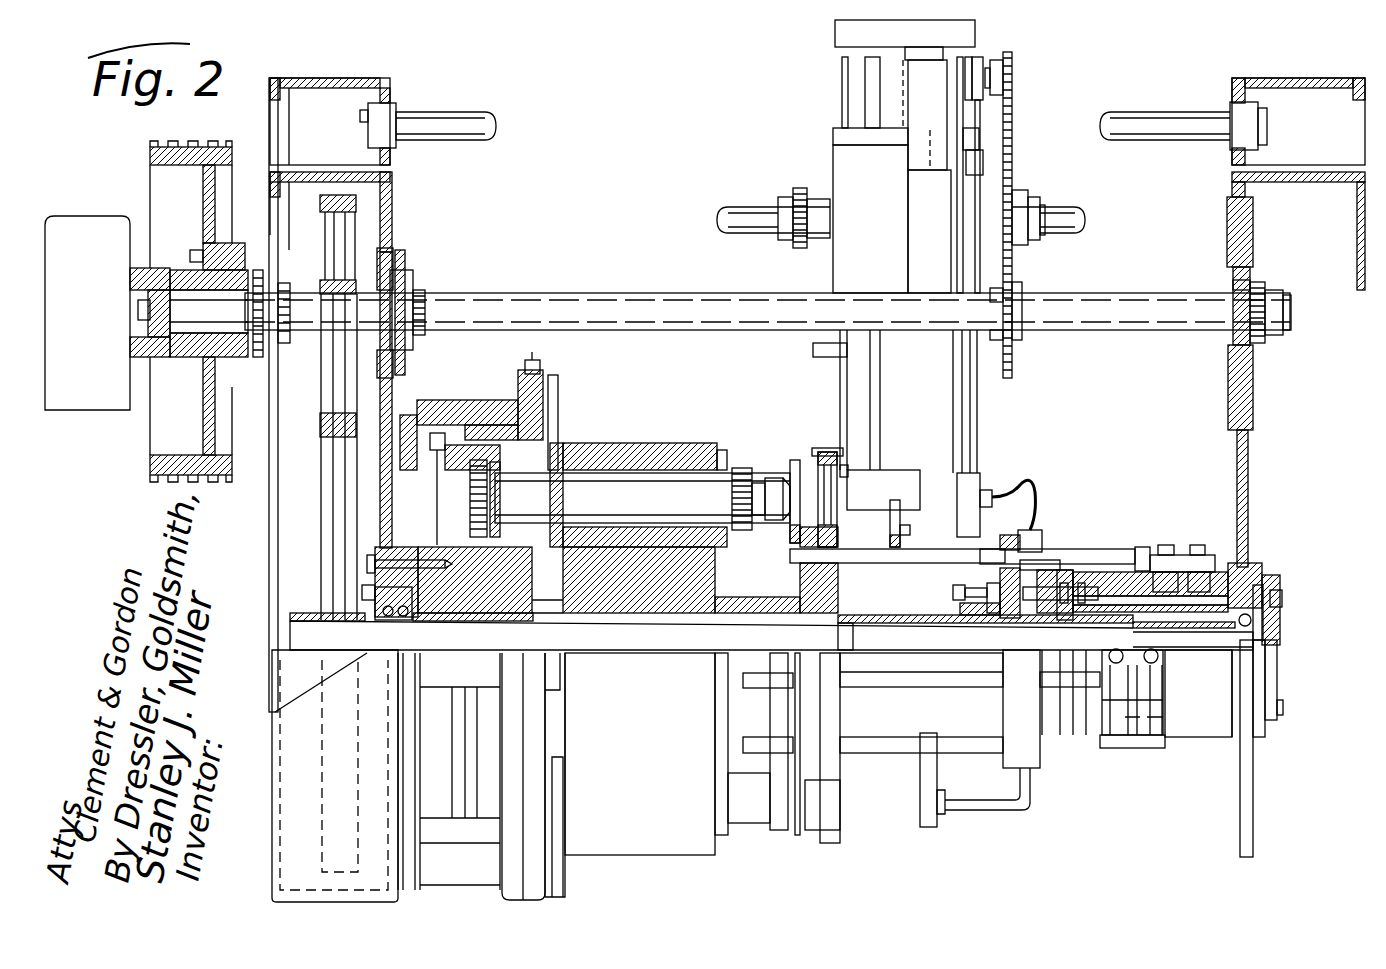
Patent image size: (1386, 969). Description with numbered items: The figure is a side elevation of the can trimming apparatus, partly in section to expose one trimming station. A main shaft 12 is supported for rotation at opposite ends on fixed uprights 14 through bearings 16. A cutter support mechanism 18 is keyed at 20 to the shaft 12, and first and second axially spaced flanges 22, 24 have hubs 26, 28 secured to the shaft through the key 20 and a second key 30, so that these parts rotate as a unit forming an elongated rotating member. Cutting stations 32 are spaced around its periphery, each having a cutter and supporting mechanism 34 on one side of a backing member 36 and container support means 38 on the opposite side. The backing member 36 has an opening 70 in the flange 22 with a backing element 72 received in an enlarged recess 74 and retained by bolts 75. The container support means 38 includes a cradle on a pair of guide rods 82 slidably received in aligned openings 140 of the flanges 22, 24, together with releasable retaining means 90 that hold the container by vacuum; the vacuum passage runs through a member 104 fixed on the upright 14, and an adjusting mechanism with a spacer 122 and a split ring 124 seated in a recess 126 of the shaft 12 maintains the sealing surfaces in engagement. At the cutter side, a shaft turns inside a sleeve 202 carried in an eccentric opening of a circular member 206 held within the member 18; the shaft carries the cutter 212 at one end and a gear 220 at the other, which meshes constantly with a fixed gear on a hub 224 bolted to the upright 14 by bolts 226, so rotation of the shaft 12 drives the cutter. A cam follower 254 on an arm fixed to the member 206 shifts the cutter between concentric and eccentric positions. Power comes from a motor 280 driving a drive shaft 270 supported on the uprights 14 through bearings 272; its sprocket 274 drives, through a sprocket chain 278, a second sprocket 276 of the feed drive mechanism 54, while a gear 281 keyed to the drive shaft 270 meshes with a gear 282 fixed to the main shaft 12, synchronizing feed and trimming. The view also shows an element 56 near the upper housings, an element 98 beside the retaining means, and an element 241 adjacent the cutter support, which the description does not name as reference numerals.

The shaft 12 is at (300, 633).
The fixed uprights 14 is at (398, 400).
The bearings 16 is at (380, 626).
The cutter support mechanism 18 is at (730, 851).
The key 20 is at (596, 614).
The first flange 22 is at (800, 584).
The second flange 24 is at (1025, 760).
The hub 26 is at (746, 606).
The hub 28 is at (1056, 608).
The second key 30 is at (1012, 618).
The cutting stations 32 is at (765, 366).
The cutter and supporting mechanism 34 is at (598, 392).
The backing member 36 is at (832, 430).
The container support means 38 is at (1068, 442).
The drive mechanism 54 is at (918, 78).
The guide rod 56 is at (440, 122).
The opening 70 is at (840, 479).
The backing element 72 is at (796, 474).
The enlarged recess 74 is at (822, 452).
The bolts 75 is at (838, 468).
The guide rods 82 is at (1110, 572).
The releasable retaining means 90 is at (989, 470).
The hose 98 is at (1032, 486).
The member 104 is at (1110, 576).
The spacer 122 is at (906, 630).
The split ring 124 is at (882, 628).
The recess 126 is at (868, 630).
The openings 140 is at (815, 558).
The sleeve 202 is at (642, 498).
The circular member 206 is at (638, 495).
The cutter 212 is at (776, 480).
The gear 220 is at (515, 498).
The hub 224 is at (410, 566).
The bolts 226 is at (474, 618).
The bracket 241 is at (478, 410).
The cam follower 254 is at (532, 372).
The drive shaft 270 is at (770, 300).
The bearings 272 is at (405, 275).
The sprocket 274 is at (1015, 345).
The second sprocket 276 is at (995, 62).
The sprocket chain 278 is at (1012, 264).
The motor 280 is at (70, 222).
The gear 281 is at (355, 222).
The gear 282 is at (335, 486).